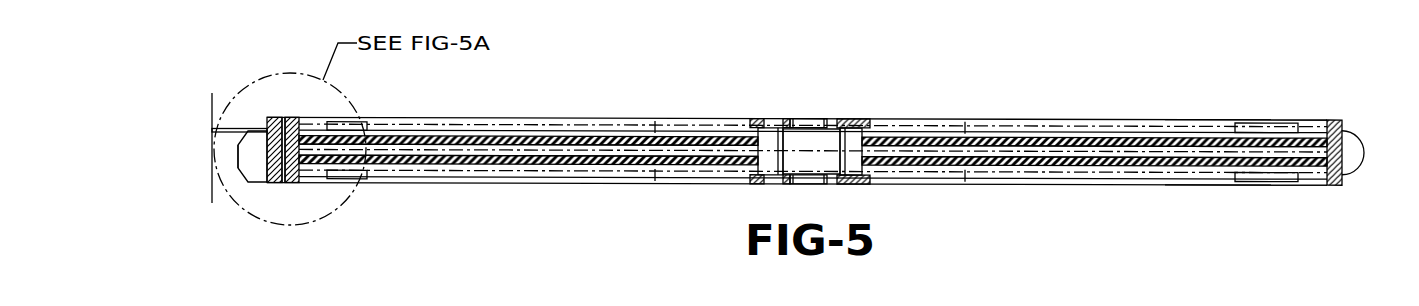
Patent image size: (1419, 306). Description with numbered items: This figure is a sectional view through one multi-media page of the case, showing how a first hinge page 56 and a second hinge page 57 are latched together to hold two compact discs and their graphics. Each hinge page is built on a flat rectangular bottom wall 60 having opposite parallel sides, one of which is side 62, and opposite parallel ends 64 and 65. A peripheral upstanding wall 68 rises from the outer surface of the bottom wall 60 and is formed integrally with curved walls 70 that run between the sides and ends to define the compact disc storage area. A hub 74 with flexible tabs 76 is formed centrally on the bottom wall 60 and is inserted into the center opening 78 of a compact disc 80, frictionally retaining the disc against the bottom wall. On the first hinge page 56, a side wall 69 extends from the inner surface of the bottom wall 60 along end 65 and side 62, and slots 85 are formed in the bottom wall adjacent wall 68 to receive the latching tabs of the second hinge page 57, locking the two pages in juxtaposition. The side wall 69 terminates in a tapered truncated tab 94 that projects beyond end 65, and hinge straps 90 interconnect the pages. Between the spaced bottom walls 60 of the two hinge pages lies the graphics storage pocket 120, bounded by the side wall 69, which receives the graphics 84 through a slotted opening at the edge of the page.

The first hinge page 56 is at (1190, 116).
The second hinge page 57 is at (1190, 186).
The bottom wall 60 is at (563, 136).
The side 62 is at (948, 129).
The end 64 is at (1343, 124).
The end 65 is at (242, 146).
The peripheral upstanding wall 68 is at (271, 117).
The side wall 69 is at (276, 182).
The curved wall 70 is at (513, 127).
The hub 74 is at (862, 118).
The flexible tab 76 is at (838, 118).
The center opening 78 is at (757, 118).
The compact disc 80 is at (620, 122).
The graphics 84 is at (1115, 151).
The slot 85 is at (286, 131).
The hinge strap 90 is at (245, 126).
The tapered truncated tab 94 is at (250, 172).
The graphics storage pocket 120 is at (333, 152).